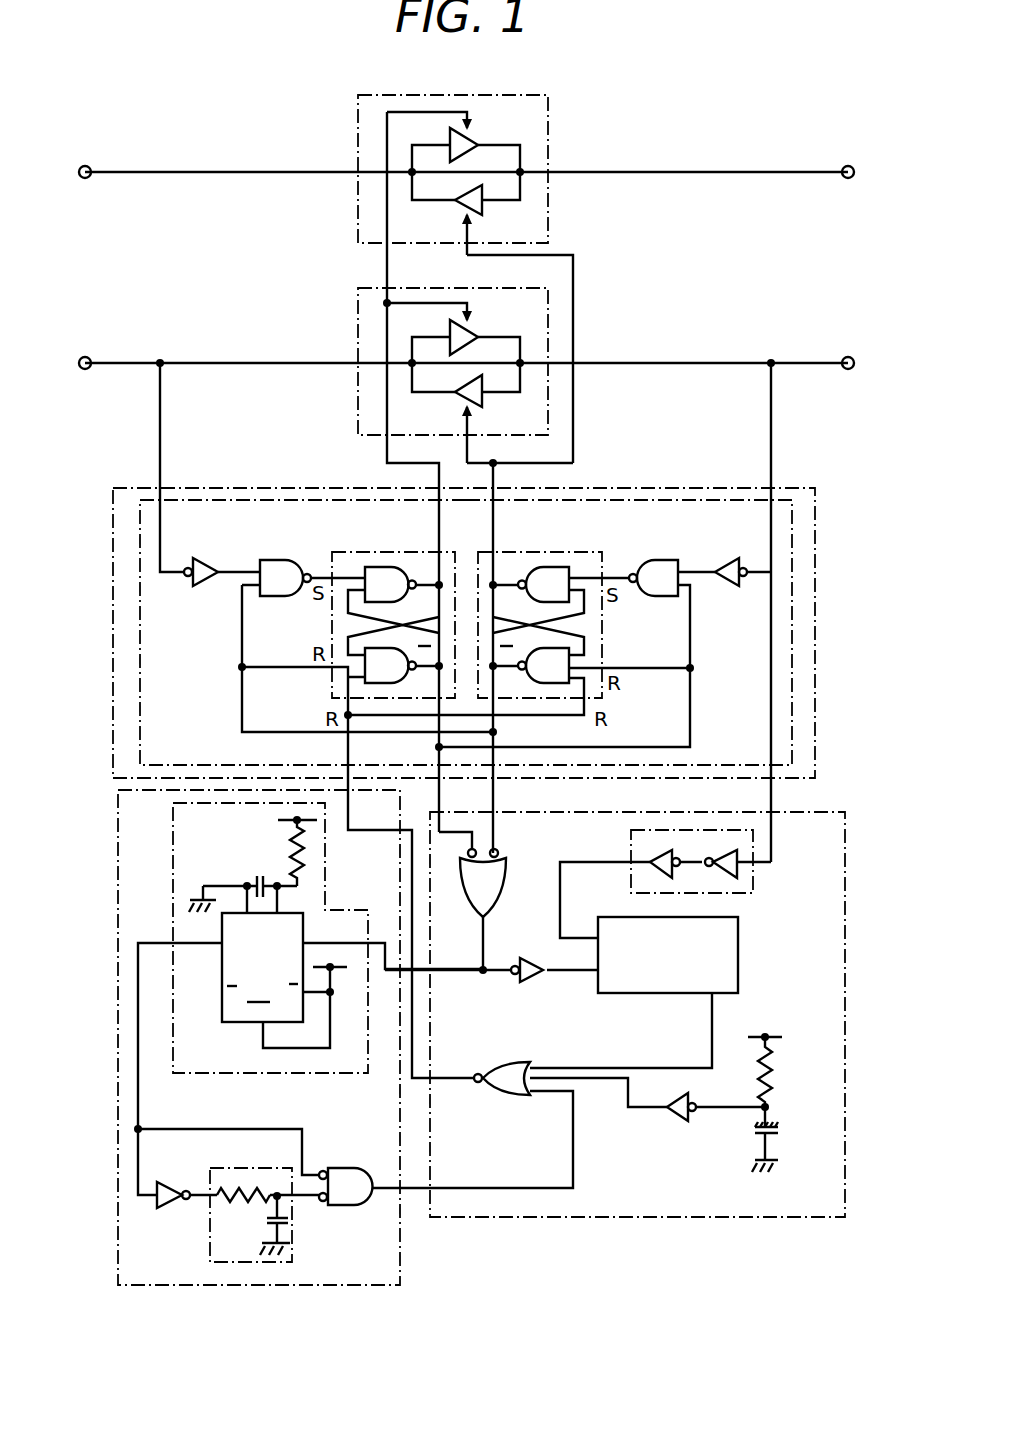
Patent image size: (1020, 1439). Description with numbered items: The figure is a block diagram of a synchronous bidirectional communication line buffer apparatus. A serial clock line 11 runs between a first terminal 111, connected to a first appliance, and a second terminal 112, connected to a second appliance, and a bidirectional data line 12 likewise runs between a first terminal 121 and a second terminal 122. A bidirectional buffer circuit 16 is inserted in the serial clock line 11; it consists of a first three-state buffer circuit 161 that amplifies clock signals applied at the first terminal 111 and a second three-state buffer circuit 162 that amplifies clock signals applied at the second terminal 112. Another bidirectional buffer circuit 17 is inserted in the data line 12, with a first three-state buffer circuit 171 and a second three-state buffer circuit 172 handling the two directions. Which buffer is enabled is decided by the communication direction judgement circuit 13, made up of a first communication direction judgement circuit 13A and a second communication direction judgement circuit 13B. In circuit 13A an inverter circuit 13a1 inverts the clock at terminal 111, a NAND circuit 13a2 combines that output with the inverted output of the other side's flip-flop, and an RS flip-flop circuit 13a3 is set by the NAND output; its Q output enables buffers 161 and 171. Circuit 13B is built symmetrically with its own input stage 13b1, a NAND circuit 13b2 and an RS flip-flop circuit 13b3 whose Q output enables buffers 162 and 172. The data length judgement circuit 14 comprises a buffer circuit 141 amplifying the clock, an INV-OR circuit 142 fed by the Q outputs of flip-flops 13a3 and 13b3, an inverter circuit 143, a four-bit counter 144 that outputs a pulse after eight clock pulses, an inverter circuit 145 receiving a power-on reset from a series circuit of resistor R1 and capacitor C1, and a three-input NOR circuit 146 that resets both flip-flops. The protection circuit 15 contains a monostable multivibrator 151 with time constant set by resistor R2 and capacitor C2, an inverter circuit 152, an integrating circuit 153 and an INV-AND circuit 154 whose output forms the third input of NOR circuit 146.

The serial clock line 11 is at (247, 361).
The bidirectional data line 12 is at (230, 174).
The first terminal 111 is at (90, 356).
The second terminal 112 is at (847, 356).
The first terminal 121 is at (88, 179).
The second terminal 122 is at (847, 179).
The communication direction judgement circuit 13 is at (257, 488).
The first communication direction judgement circuit 13A is at (140, 598).
The second communication direction judgement circuit 13B is at (792, 605).
The inverter circuit 13a1 is at (196, 588).
The NAND circuit 13a2 is at (282, 558).
The RS flip-flop circuit 13a3 is at (388, 552).
The inverter 13b1 is at (730, 588).
The NAND circuit 13b2 is at (660, 560).
The RS flip-flop circuit 13b3 is at (538, 552).
The data length judgement circuit 14 is at (845, 960).
The buffer circuit 141 is at (631, 844).
The INV-OR circuit 142 is at (505, 888).
The inverter circuit 143 is at (540, 982).
The 4-bit counter 144 is at (623, 995).
The inverter circuit 145 is at (675, 1122).
The NOR circuit 146 is at (500, 1062).
The resistor R1 is at (772, 1062).
The capacitor C1 is at (780, 1130).
The protection circuit 15 is at (118, 998).
The monostable multivibrator 151 is at (173, 868).
The inverter circuit 152 is at (166, 1208).
The integrating circuit 153 is at (292, 1222).
The INV-AND circuit 154 is at (350, 1168).
The resistor R2 is at (290, 848).
The capacitor C2 is at (254, 874).
The bidirectional buffer circuit 16 is at (548, 300).
The first three-state buffer circuit 161 is at (470, 333).
The second three-state buffer circuit 162 is at (455, 400).
The bidirectional buffer circuit 17 is at (548, 110).
The first three-state buffer circuit 171 is at (470, 140).
The second three-state buffer circuit 172 is at (455, 208).